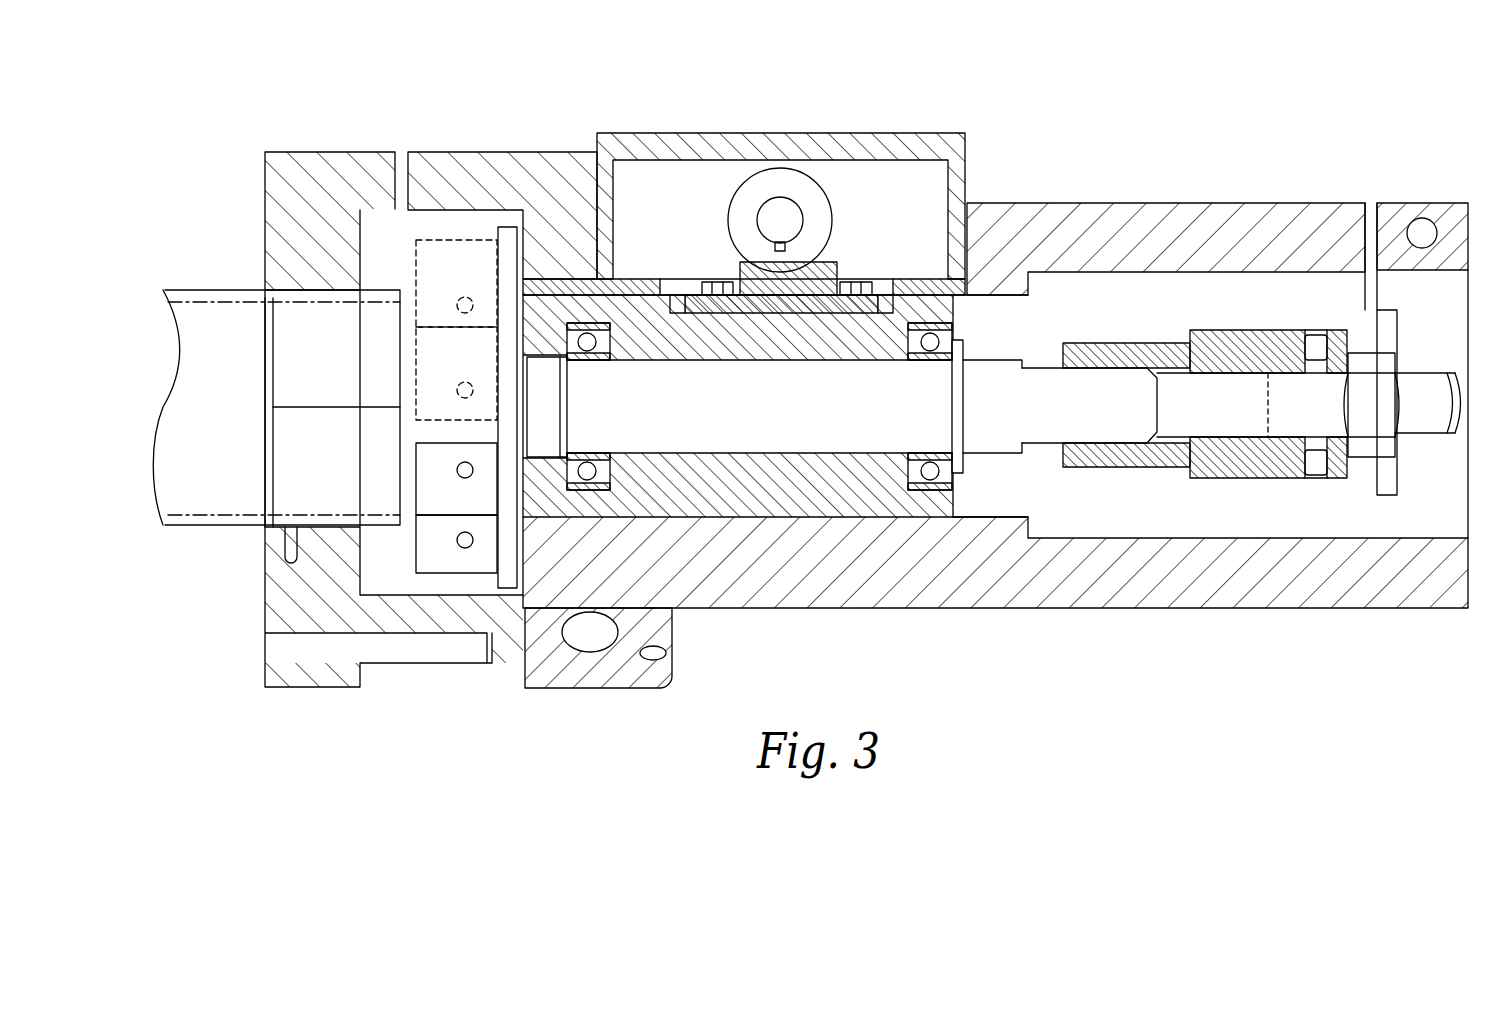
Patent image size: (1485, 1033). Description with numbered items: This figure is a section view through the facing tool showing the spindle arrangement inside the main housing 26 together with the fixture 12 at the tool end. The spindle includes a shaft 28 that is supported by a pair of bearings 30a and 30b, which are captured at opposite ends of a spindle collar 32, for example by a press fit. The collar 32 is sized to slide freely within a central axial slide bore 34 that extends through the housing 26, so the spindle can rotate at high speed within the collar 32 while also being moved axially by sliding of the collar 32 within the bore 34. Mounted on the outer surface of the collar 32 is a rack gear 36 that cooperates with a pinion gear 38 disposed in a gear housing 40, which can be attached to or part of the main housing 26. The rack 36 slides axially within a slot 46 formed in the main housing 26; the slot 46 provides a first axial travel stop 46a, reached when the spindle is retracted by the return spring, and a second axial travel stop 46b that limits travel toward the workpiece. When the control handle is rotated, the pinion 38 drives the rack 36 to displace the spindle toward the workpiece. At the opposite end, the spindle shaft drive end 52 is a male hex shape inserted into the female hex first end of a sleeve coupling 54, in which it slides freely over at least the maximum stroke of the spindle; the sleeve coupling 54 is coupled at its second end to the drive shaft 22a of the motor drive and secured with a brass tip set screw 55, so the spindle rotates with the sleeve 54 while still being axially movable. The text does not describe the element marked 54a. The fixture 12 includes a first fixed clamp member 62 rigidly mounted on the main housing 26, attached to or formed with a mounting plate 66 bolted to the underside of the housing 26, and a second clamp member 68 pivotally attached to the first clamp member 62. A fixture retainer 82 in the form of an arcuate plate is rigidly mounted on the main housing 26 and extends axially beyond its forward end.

The fixture 12 is at (413, 131).
The drive shaft 22a is at (1440, 410).
The main housing 26 is at (1130, 203).
The shaft 28 is at (777, 418).
The bearing 30a is at (580, 435).
The bearing 30b is at (925, 390).
The spindle collar 32 is at (832, 495).
The central axial slide bore 34 is at (1000, 310).
The rack gear 36 is at (847, 262).
The pinion gear 38 is at (830, 168).
The gear housing 40 is at (690, 150).
The slot 46 is at (689, 281).
The first axial travel stop 46a is at (890, 285).
The second axial travel stop 46b is at (672, 282).
The spindle shaft drive end 52 is at (1085, 410).
The sleeve coupling 54 is at (1108, 343).
The sleeve flange 54a is at (1175, 420).
The brass tip set screw 55 is at (1320, 458).
The first fixed clamp member 62 is at (270, 582).
The mounting plate 66 is at (578, 680).
The second clamp member 68 is at (304, 158).
The fixture retainer 82 is at (493, 154).